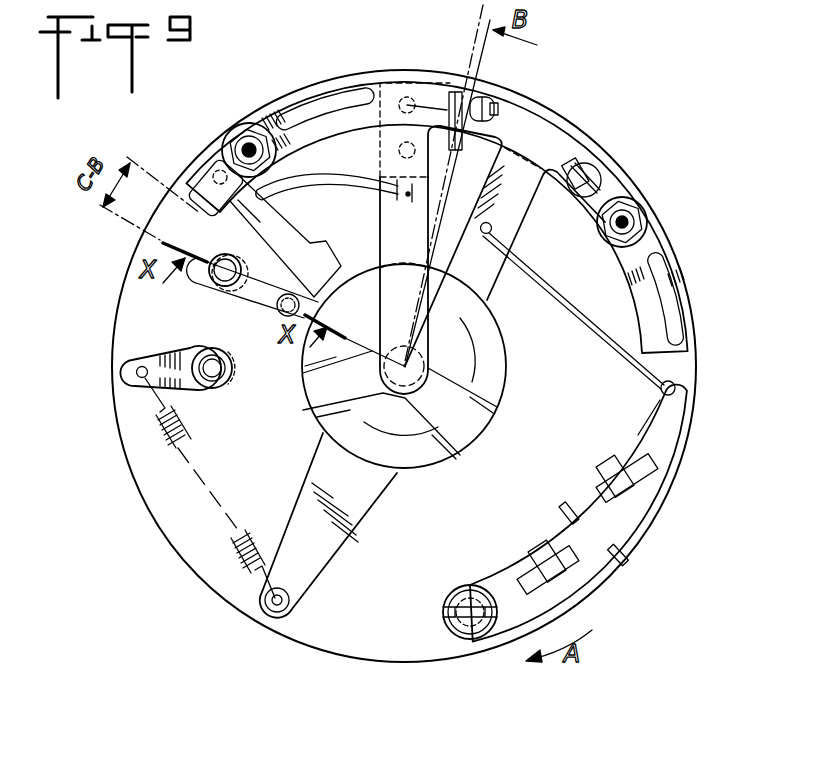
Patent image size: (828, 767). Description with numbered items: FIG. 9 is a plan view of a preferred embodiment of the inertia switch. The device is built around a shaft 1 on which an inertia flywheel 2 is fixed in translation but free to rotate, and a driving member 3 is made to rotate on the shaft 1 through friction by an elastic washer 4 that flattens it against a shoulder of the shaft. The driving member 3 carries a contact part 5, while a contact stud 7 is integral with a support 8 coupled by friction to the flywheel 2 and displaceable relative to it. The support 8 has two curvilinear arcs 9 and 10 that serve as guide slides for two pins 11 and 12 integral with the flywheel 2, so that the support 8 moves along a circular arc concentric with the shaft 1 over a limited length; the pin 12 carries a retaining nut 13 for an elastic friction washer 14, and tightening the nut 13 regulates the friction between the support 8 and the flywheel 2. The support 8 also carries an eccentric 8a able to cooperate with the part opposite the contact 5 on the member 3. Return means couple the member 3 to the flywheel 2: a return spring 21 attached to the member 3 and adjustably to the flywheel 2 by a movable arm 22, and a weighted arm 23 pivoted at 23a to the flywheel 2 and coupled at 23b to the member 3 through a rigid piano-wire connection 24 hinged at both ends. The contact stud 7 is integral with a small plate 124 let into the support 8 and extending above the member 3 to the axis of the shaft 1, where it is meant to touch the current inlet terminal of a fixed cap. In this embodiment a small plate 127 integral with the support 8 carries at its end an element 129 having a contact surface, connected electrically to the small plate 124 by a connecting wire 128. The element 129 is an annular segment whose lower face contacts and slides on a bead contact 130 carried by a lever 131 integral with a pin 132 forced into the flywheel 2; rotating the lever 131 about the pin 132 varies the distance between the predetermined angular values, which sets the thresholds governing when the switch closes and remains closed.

The shaft 1 is at (415, 372).
The inertia flywheel 2 is at (315, 640).
The driving member 3 is at (512, 210).
The elastic washer 4 is at (470, 428).
The contact element part 5 is at (485, 100).
The contact stud 7 is at (462, 95).
The support 8 is at (372, 88).
The eccentric 8a is at (600, 170).
The curvilinear arc 9 is at (345, 98).
The curvilinear arc 10 is at (668, 320).
The pin 11 is at (238, 140).
The pin 12 is at (636, 222).
The retaining nut 13 is at (640, 230).
The friction washer 14 is at (655, 266).
The return spring 21 is at (187, 433).
The movable arm 22 is at (152, 363).
The weighted arm 23 is at (565, 537).
The pivot 23a is at (465, 593).
The coupling point 23b is at (637, 437).
The rigid connection 24 is at (571, 303).
The small plate 124 is at (410, 235).
The small plate 127 is at (240, 220).
The connecting wire 128 is at (318, 185).
The contact surface element 129 is at (333, 255).
The bead contact 130 is at (278, 327).
The lever 131 is at (255, 298).
The pin 132 is at (222, 290).